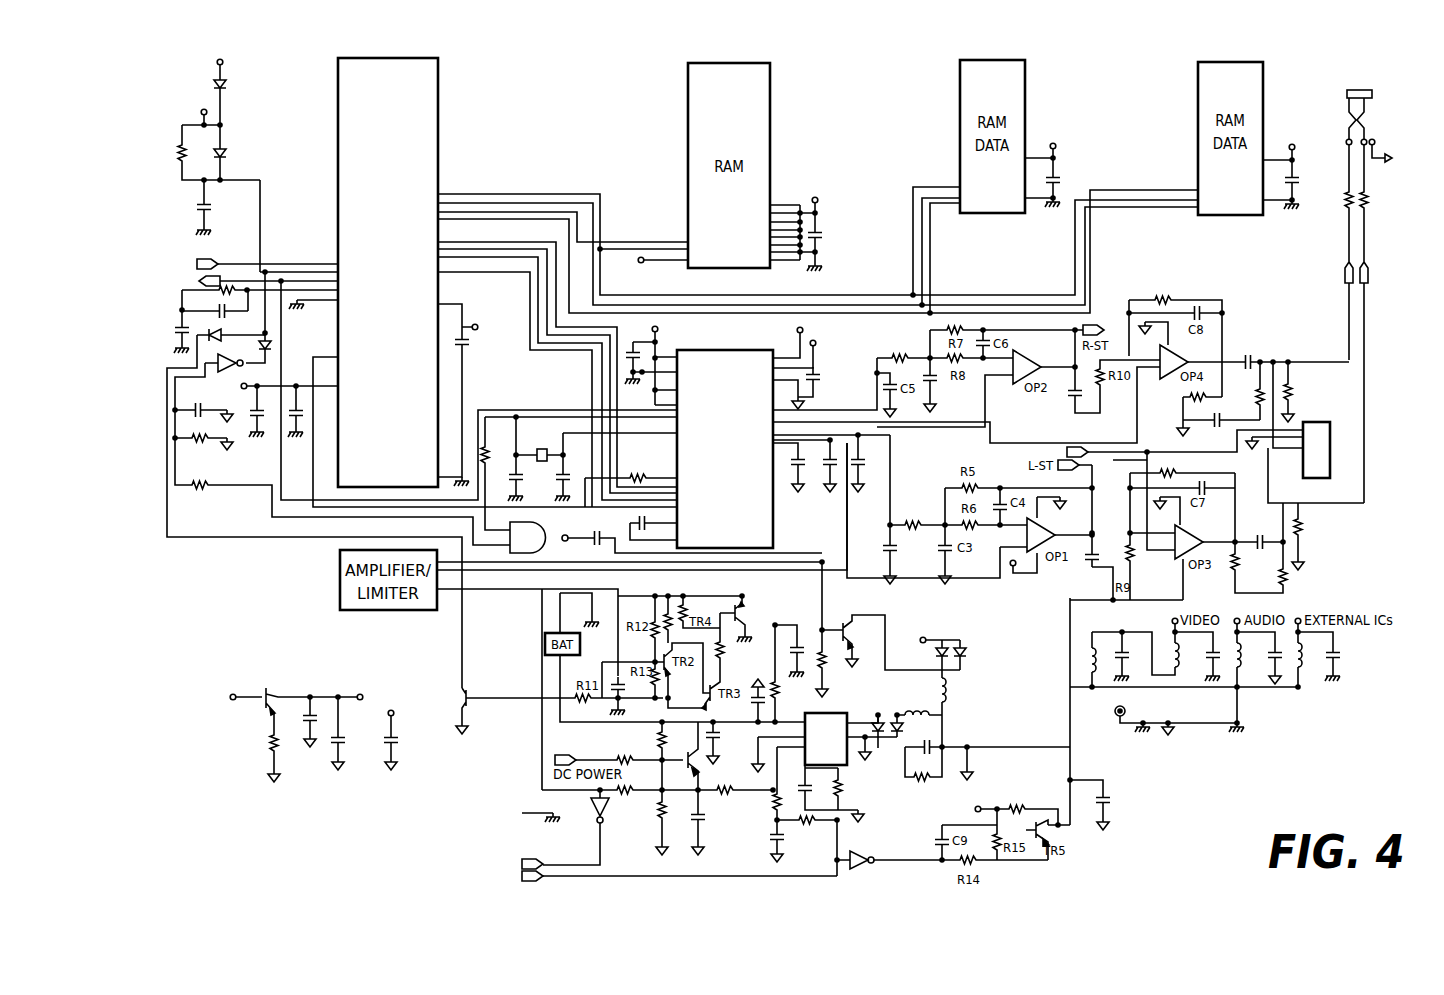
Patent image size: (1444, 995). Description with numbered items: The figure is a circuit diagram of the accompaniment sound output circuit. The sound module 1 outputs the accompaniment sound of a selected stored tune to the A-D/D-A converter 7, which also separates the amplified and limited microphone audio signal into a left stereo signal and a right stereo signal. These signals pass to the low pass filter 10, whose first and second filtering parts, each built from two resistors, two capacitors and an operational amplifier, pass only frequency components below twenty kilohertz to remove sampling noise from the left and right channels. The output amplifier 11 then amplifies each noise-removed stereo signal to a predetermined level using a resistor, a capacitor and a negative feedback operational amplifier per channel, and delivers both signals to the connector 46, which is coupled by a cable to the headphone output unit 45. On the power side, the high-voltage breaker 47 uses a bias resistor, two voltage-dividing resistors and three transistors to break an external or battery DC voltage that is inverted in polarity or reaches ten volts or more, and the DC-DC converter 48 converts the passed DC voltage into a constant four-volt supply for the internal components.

The sound module 1 is at (322, 123).
The A-D/D-A converter 7 is at (738, 350).
The low pass filter 10 is at (952, 445).
The output amplifier 11 is at (1274, 352).
The headphone output unit 45 is at (1357, 86).
The connector 46 is at (1318, 422).
The high-voltage breaker 47 is at (555, 725).
The DC-DC converter 48 is at (840, 713).